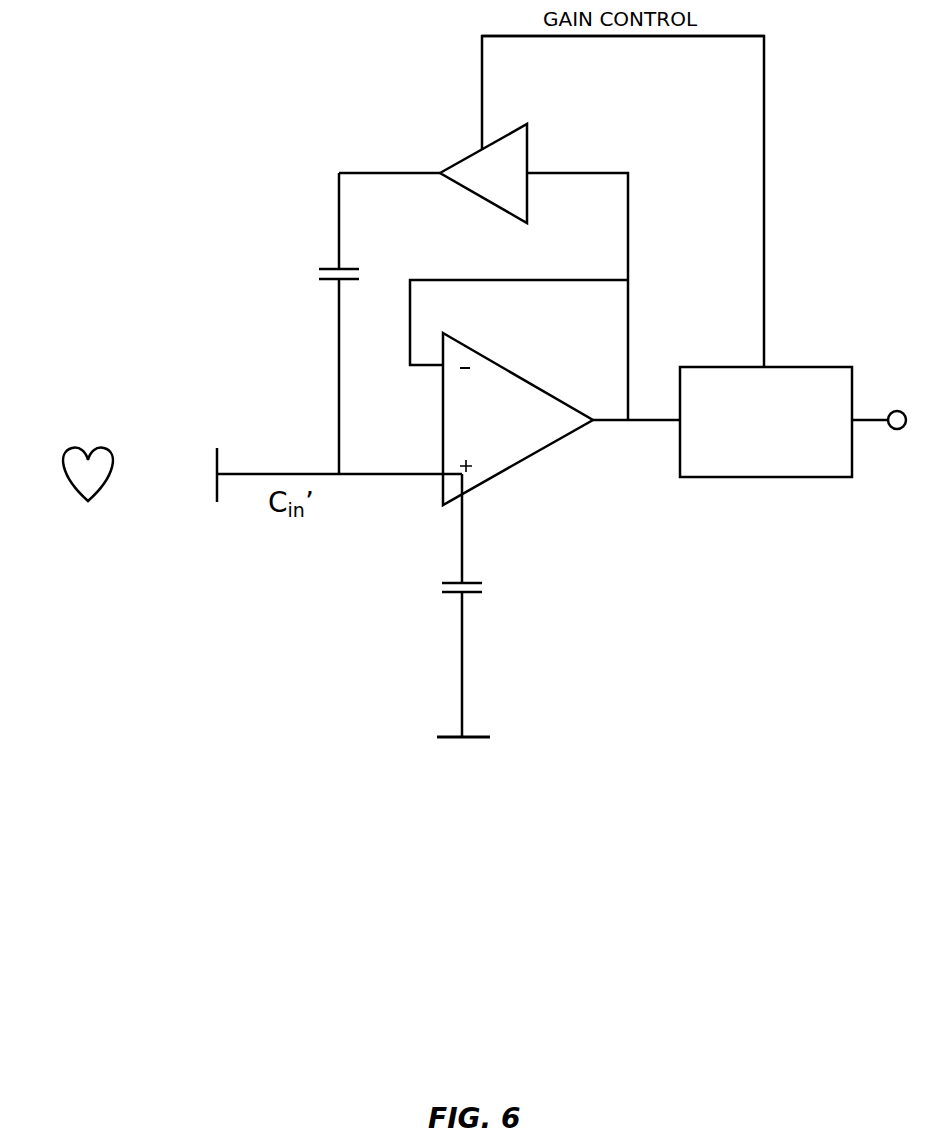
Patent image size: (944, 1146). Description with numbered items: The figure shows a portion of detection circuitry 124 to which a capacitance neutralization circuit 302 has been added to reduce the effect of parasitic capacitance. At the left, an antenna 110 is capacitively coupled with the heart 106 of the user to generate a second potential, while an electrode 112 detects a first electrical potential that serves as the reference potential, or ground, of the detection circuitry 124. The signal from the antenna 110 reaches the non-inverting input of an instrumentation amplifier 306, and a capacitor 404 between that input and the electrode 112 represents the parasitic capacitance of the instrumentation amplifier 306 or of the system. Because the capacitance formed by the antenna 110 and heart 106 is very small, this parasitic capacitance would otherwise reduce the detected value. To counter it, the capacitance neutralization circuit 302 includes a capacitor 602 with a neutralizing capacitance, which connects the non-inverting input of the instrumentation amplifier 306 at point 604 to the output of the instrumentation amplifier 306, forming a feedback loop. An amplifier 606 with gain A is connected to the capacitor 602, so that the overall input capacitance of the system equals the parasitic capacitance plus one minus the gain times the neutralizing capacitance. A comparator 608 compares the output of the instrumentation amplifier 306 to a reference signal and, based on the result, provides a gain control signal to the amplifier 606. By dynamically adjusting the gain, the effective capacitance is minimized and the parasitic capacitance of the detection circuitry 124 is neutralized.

The capacitance neutralization circuit 302 is at (416, 98).
The amplifier 606 is at (527, 143).
The capacitor 602 is at (345, 281).
The point 604 is at (343, 477).
The instrumentation amplifier 306 is at (512, 468).
The comparator 608 is at (793, 422).
The heart 106 is at (66, 486).
The antenna 110 is at (219, 460).
The capacitor 404 is at (453, 596).
The electrode 112 is at (484, 740).
The detection circuitry 124 is at (244, 906).